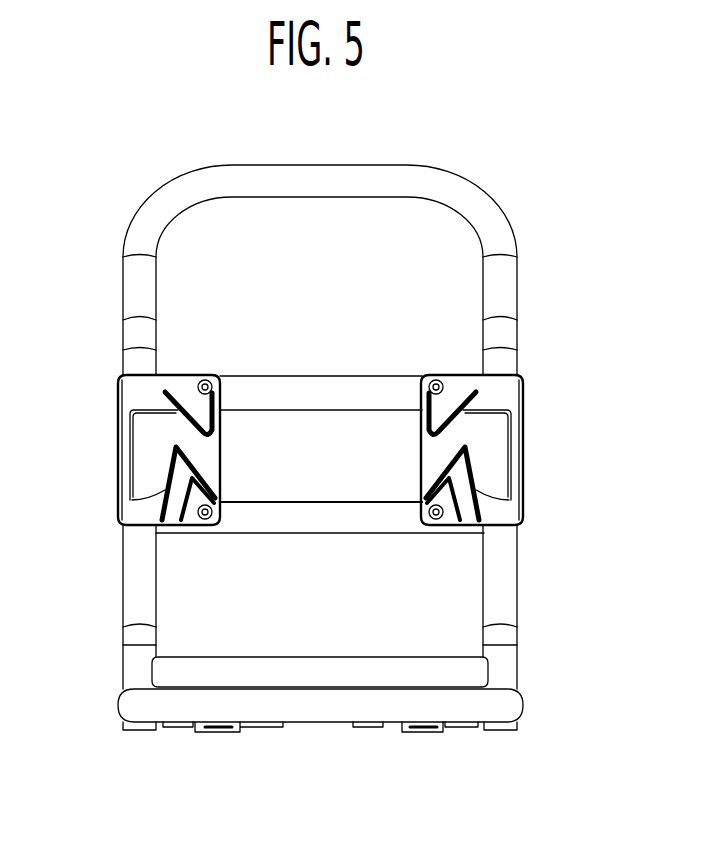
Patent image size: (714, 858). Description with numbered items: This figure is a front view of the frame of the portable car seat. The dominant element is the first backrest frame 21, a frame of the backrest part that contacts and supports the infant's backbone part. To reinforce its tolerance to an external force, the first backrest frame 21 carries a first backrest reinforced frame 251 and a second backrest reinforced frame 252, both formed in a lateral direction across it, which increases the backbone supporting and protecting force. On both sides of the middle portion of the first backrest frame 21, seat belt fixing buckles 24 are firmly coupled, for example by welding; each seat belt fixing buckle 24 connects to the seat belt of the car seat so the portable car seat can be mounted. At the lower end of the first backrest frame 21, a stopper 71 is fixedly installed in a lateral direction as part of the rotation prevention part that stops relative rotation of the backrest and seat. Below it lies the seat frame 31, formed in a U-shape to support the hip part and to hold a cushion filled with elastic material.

The first backrest frame 21 is at (358, 178).
The first backrest reinforced frame 251 is at (265, 390).
The second backrest reinforced frame 252 is at (263, 510).
The seat belt fixing buckle 24 is at (136, 511).
The stopper 71 is at (318, 680).
The seat frame 31 is at (497, 710).